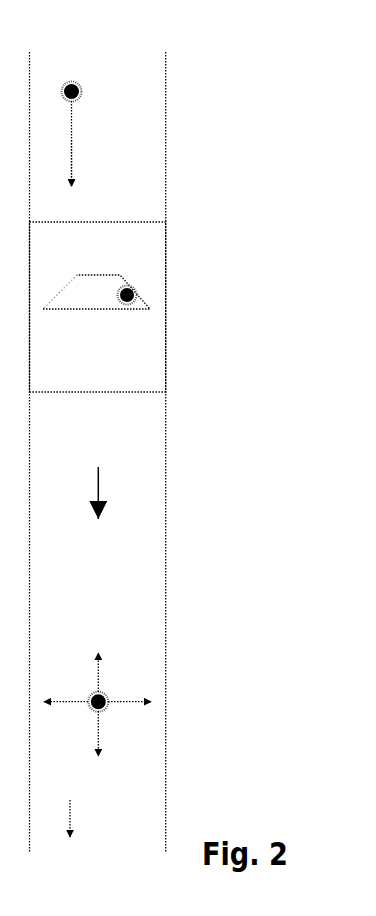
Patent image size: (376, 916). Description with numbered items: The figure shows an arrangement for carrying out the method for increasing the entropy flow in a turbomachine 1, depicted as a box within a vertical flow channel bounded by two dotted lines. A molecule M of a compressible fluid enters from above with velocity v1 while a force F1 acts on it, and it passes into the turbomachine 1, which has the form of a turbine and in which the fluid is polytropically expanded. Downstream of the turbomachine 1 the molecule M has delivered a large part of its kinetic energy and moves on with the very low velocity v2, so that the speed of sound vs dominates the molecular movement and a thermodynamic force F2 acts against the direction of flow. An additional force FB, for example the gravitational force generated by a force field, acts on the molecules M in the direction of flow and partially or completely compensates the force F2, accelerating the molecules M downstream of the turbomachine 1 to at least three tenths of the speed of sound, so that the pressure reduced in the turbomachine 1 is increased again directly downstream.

The molecules M is at (72, 92).
The turbomachine 1 is at (127, 295).
The force on particle before detection F1 is at (102, 143).
The velocity upstream of turbomachine v1 is at (101, 167).
The force acting in the direction of flow FB is at (71, 493).
The thermodynamic force acting against the direction of flow F2 is at (97, 667).
The speed of sound vs is at (112, 693).
The velocity downstream of turbomachine v2 is at (97, 817).